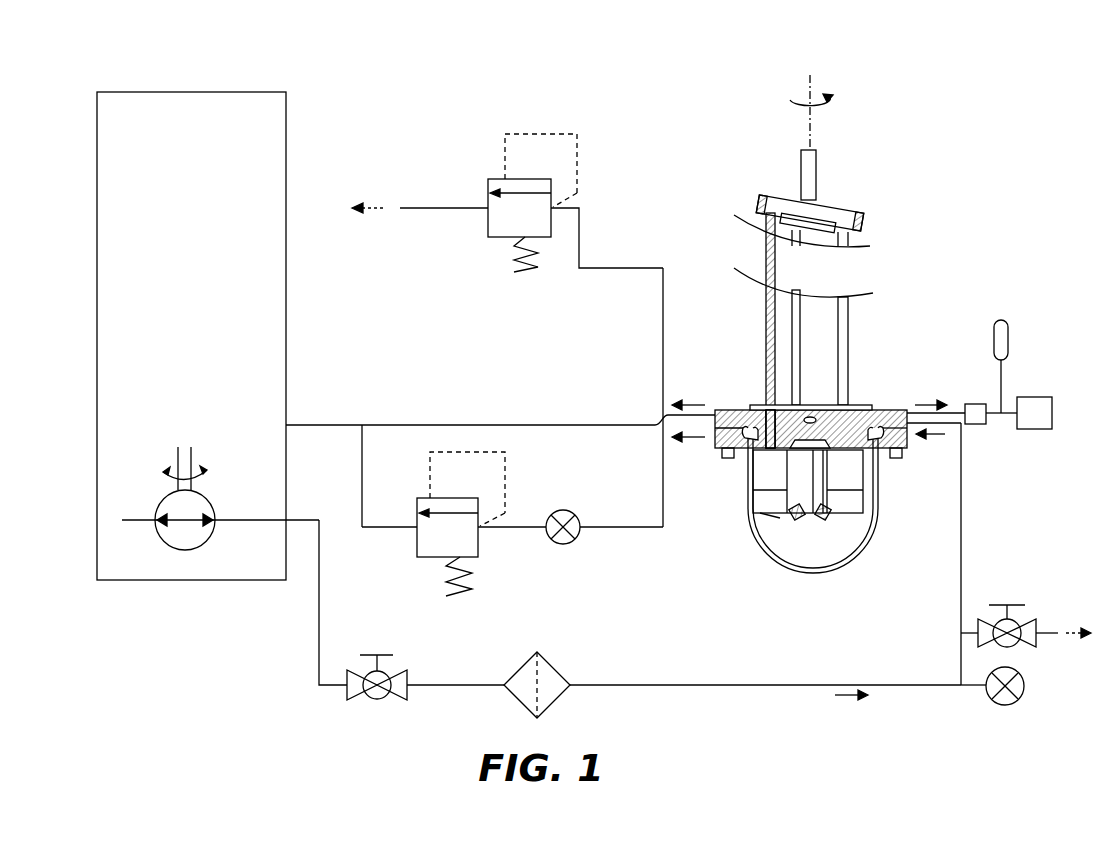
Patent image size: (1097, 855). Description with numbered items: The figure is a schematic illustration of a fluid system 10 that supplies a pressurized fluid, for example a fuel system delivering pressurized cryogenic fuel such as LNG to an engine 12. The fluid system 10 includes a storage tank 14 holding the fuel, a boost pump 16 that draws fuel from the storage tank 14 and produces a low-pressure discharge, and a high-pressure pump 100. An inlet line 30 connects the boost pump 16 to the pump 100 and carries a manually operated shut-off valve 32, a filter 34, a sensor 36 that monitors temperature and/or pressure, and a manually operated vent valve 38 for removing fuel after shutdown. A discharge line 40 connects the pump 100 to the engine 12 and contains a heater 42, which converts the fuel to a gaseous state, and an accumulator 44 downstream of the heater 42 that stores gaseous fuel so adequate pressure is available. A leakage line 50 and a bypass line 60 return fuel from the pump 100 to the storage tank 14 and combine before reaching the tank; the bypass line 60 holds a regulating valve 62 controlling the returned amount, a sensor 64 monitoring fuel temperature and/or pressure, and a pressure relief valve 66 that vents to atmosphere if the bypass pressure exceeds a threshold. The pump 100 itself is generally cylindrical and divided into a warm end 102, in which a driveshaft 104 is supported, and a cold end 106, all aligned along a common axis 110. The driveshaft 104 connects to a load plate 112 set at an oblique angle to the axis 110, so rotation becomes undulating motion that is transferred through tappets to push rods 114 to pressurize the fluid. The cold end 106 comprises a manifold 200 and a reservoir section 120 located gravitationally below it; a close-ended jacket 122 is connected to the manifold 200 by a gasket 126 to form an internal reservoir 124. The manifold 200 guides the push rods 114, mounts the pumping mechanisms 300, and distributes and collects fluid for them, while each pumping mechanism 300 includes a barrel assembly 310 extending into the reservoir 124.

The fluid system 10 is at (1017, 118).
The engine 12 is at (1034, 396).
The storage tank 14 is at (200, 582).
The boost pump 16 is at (214, 497).
The inlet line 30 is at (762, 690).
The shut-off valve 32 is at (378, 700).
The filter 34 is at (555, 705).
The sensor 36 is at (1015, 705).
The vent valve 38 is at (1035, 645).
The discharge line 40 is at (953, 411).
The heater 42 is at (975, 428).
The accumulator 44 is at (1004, 316).
The leakage line 50 is at (547, 423).
The bypass line 60 is at (628, 530).
The regulating valve 62 is at (478, 550).
The sensor 64 is at (565, 545).
The pressure relief valve 66 is at (495, 238).
The pump 100 is at (924, 203).
The warm end 102 is at (745, 180).
The driveshaft 104 is at (818, 168).
The cold end 106 is at (763, 560).
The axis 110 is at (813, 130).
The load plate 112 is at (865, 222).
The push rod 114 is at (845, 337).
The reservoir section 120 is at (852, 565).
The jacket 122 is at (799, 573).
The reservoir 124 is at (797, 564).
The gasket 126 is at (880, 440).
The manifold 200 is at (713, 408).
The pumping mechanism 300 is at (758, 524).
The barrel assembly 310 is at (760, 481).